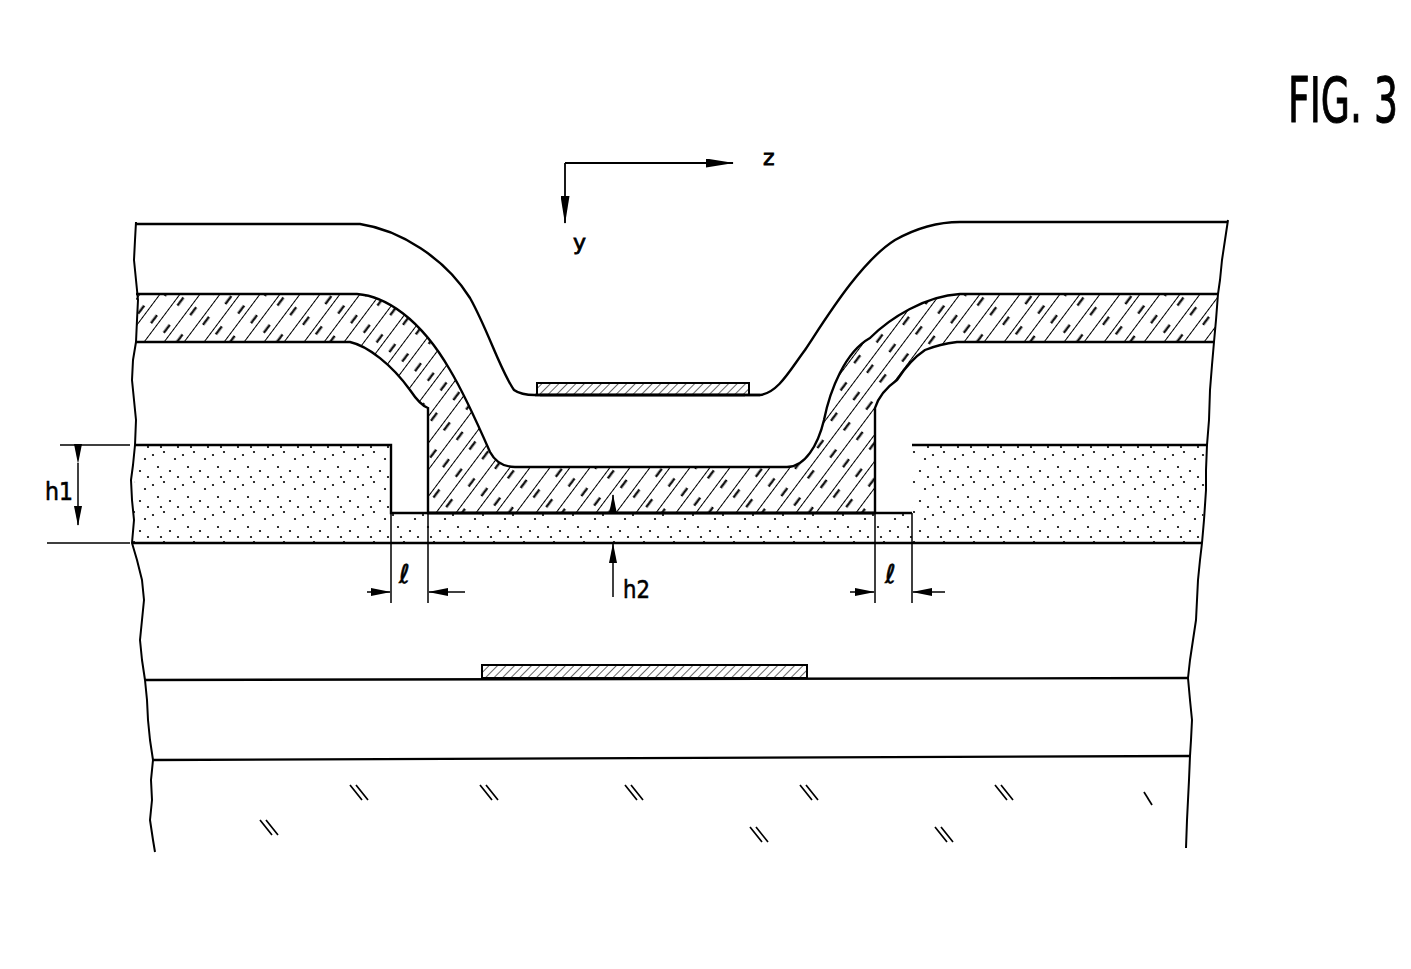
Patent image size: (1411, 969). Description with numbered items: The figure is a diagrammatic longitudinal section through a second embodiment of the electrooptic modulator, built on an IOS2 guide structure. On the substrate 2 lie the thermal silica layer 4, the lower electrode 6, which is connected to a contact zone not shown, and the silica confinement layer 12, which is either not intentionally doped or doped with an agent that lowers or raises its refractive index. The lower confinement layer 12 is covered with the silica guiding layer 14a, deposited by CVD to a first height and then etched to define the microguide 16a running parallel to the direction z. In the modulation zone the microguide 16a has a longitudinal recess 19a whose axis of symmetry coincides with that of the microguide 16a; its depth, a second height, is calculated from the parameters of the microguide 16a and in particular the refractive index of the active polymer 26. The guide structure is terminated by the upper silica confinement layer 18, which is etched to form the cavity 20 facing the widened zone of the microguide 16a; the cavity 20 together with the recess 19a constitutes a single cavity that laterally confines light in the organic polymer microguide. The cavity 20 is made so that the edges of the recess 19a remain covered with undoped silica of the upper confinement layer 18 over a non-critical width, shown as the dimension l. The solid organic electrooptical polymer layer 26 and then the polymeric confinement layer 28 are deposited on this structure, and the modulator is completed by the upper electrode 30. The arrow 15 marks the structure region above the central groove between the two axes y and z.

The substrate 2 is at (1148, 835).
The thermal silica layer 4 is at (1165, 720).
The lower electrode 6 is at (565, 664).
The silica confinement layer 12 is at (1165, 617).
The silica guiding layer 14a is at (1180, 507).
The microguide 16a is at (1181, 442).
The upper confinement layer 18 is at (1190, 375).
The groove 15 is at (552, 340).
The longitudinal recess 19a is at (707, 503).
The cavity 20 is at (873, 427).
The electrooptical polymer layer 26 is at (515, 492).
The polymeric confinement layer 28 is at (622, 440).
The upper electrode 30 is at (689, 384).